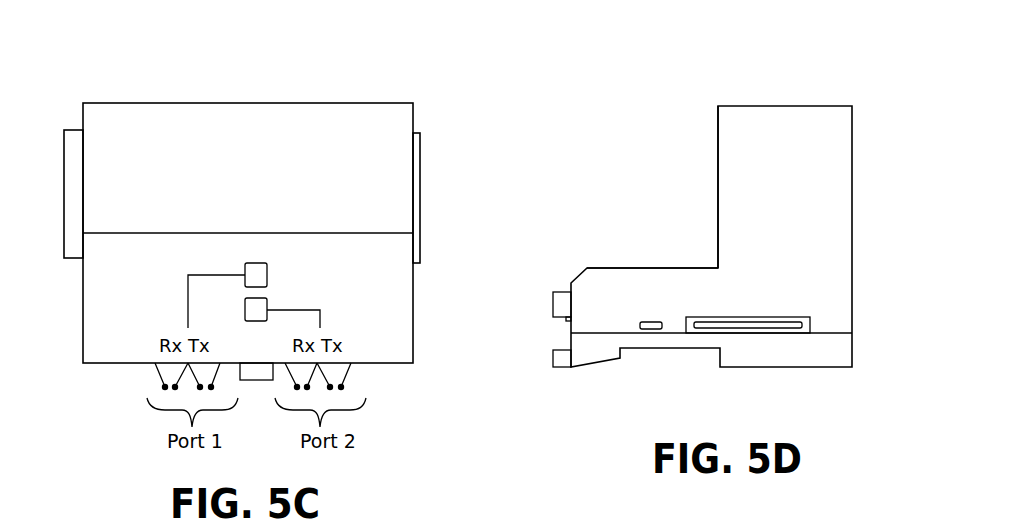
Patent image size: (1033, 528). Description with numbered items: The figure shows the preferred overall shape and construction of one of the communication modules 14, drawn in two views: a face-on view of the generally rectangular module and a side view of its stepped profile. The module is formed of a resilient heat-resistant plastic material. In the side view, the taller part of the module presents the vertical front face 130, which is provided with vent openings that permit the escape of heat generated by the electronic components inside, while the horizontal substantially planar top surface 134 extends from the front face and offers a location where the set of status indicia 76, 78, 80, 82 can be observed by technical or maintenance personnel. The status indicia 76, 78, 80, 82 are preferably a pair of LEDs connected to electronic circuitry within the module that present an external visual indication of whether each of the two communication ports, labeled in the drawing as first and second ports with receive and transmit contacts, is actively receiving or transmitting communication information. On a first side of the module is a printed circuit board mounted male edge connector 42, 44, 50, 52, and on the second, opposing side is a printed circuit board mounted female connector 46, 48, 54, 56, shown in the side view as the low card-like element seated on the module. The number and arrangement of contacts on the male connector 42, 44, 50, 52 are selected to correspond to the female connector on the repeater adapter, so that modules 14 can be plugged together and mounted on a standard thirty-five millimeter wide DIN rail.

In FIG. 5C, the communication modules 14 is at (243, 62).
In FIG. 5D, the communication modules 14 is at (747, 62).
In FIG. 5C, the male connector 42 is at (161, 194).
In FIG. 5C, the male connector 44 is at (161, 194).
In FIG. 5C, the male connector 50 is at (161, 194).
In FIG. 5C, the male connector 52 is at (77, 172).
In FIG. 5C, the female connector 46 is at (498, 183).
In FIG. 5D, the female connector 46 is at (797, 305).
In FIG. 5C, the female connector 48 is at (498, 183).
In FIG. 5D, the female connector 48 is at (797, 305).
In FIG. 5C, the female connector 54 is at (498, 183).
In FIG. 5D, the female connector 54 is at (797, 305).
In FIG. 5C, the female connector 56 is at (420, 133).
In FIG. 5D, the female connector 56 is at (742, 301).
In FIG. 5C, the communication status indicia 76 is at (299, 262).
In FIG. 5C, the communication status indicia 78 is at (299, 262).
In FIG. 5C, the communication status indicia 80 is at (299, 262).
In FIG. 5C, the communication status indicia 82 is at (259, 246).
In FIG. 5D, the vertical front face 130 is at (718, 133).
In FIG. 5D, the top surface 134 is at (618, 268).